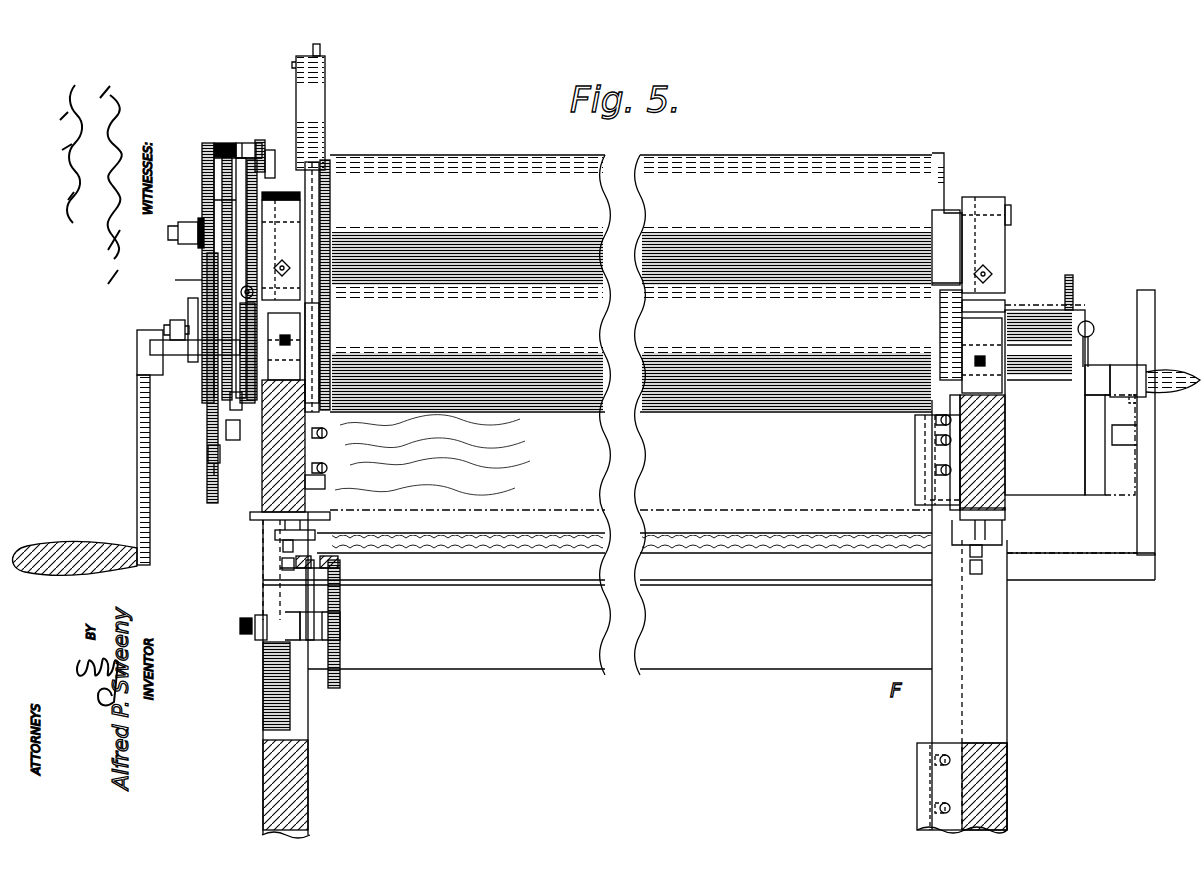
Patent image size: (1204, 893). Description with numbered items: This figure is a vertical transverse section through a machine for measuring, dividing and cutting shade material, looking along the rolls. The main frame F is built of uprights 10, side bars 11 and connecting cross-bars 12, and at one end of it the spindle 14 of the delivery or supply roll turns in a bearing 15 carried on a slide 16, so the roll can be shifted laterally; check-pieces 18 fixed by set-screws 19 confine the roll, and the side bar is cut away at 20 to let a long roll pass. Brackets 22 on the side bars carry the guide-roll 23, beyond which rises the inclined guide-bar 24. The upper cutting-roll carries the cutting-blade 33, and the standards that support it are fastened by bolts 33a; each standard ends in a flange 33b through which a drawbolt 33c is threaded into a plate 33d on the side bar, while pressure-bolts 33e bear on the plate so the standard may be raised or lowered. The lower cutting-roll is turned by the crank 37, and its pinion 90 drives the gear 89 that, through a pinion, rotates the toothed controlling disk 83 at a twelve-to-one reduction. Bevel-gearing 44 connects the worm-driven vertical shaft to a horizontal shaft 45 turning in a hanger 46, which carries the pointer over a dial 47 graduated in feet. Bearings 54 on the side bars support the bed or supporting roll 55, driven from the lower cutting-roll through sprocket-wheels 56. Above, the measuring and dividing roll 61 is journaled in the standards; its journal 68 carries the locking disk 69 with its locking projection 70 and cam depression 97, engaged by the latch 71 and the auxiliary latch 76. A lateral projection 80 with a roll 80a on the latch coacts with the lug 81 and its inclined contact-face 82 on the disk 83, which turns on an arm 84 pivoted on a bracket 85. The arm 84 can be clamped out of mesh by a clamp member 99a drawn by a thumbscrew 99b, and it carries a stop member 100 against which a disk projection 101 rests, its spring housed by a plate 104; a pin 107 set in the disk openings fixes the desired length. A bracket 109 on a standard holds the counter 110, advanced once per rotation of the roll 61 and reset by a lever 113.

The uprights 10 is at (308, 728).
The side bars 11 is at (627, 450).
The connecting cross-bars 12 is at (786, 589).
The spindle 14 is at (1160, 372).
The bearing 15 is at (1148, 472).
The slide 16 is at (1072, 580).
The check-pieces 18 is at (1073, 285).
The set-screws 19 is at (1094, 329).
The cut-away portion 20 is at (1045, 402).
The brackets 22 is at (1085, 430).
The guide-roll 23 is at (1090, 370).
The guide-bar 24 is at (1045, 305).
The cutting-blade 33 is at (944, 155).
The bolts 33a is at (327, 438).
The flange 33b is at (300, 532).
The drawbolt 33c is at (970, 552).
The plate 33d is at (325, 500).
The pressure-bolt 33e is at (978, 594).
The crank or driving member 37 is at (150, 488).
The bevel-gearing 44 is at (338, 562).
The horizontal shaft 45 is at (300, 640).
The hanger 46 is at (340, 600).
The dial 47 is at (263, 690).
The bearing 54 is at (320, 318).
The bed or supporting roll 55 is at (786, 348).
The sprocket-wheels 56 is at (290, 340).
The measuring and dividing roll 61 is at (786, 221).
The journal 68 is at (178, 232).
The locking member or disk 69 is at (265, 150).
The locking projection 70 is at (262, 198).
The latch 71 is at (214, 192).
The auxiliary latch 76 is at (270, 155).
The lateral projection 80 is at (244, 143).
The roll 80a is at (216, 145).
The lug or projection 81 is at (205, 145).
The inclined contact-face 82 is at (214, 150).
The controlling member or disk 83 is at (247, 182).
The arm 84 is at (198, 238).
The bracket 85 is at (250, 505).
The gear 89 is at (222, 148).
The pinion 90 is at (284, 346).
The depression 97 is at (281, 250).
The clamp member 99a is at (226, 432).
The thumbscrew 99b is at (230, 400).
The stop member 100 is at (188, 300).
The projection 101 is at (170, 324).
The plate 104 is at (175, 282).
The pin 107 is at (216, 466).
The bracket 109 is at (320, 222).
The counter 110 is at (325, 102).
The lever 113 is at (320, 47).